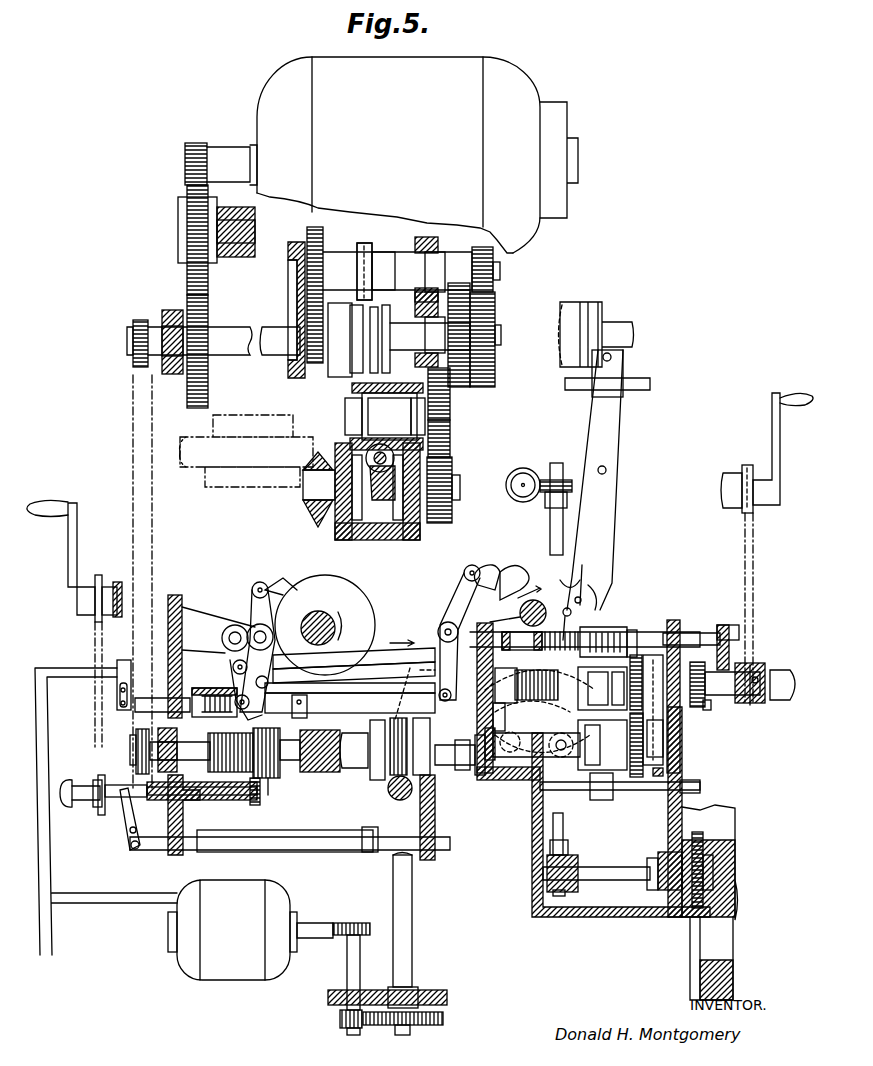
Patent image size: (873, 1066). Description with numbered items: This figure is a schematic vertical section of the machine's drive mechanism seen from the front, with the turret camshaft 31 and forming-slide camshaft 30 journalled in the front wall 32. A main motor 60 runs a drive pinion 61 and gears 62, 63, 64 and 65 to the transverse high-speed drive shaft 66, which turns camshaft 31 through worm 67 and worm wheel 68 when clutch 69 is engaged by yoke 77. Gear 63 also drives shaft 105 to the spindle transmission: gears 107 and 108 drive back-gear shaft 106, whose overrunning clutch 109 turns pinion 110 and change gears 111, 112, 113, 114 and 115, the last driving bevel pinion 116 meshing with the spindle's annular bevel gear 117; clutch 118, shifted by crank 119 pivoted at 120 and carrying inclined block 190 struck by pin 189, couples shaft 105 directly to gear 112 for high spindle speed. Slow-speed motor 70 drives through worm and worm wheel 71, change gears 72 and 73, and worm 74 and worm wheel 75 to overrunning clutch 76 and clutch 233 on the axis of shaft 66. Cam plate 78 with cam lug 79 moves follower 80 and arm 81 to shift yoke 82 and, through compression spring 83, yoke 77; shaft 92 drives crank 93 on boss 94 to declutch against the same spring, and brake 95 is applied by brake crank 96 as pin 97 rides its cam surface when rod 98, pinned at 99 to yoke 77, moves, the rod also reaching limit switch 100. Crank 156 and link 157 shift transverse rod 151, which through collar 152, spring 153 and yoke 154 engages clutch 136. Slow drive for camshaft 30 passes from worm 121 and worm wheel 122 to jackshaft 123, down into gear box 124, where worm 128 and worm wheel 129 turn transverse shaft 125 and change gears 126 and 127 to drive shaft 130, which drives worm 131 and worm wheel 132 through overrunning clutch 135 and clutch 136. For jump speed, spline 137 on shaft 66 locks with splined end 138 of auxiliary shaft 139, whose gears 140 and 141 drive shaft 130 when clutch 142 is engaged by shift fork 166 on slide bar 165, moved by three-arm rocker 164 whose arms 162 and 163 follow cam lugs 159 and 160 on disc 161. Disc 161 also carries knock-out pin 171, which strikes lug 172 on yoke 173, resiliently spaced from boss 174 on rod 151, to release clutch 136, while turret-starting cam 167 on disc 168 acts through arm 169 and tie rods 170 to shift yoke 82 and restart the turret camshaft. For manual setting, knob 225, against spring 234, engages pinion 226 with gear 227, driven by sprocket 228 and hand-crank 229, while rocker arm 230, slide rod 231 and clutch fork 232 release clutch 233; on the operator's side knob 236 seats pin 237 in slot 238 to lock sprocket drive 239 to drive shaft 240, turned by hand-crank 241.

The main motor 60 is at (522, 78).
The drive pinion 61 is at (185, 163).
The gear 62 is at (187, 250).
The gear 63 is at (190, 390).
The gear 64 is at (136, 355).
The shaft 105 is at (230, 335).
The back-gear shaft 106 is at (338, 255).
The reduction gear 107 is at (322, 362).
The reduction gear 108 is at (312, 232).
The overrunning clutch 109 is at (372, 246).
The pinion 110 is at (478, 250).
The change gear 111 is at (490, 362).
The change gear 112 is at (468, 380).
The change gear 113 is at (450, 410).
The change gear 114 is at (448, 440).
The change gear 115 is at (452, 508).
The bevel pinion 116 is at (315, 455).
The annular bevel gear 117 is at (198, 452).
The clutch 118 is at (388, 322).
The actuating crank 119 is at (612, 372).
The pivot 120 is at (615, 462).
The worm 121 is at (380, 500).
The worm wheel 122 is at (380, 445).
The jackshaft 123 is at (552, 535).
The hand-crank 241 is at (776, 458).
The sprocket drive 239 is at (752, 565).
The hand-crank 229 is at (77, 538).
The sprocket 228 is at (98, 648).
The limit switch 100 is at (122, 660).
The clutch-actuating rod 98 is at (155, 705).
The crank 156 is at (215, 660).
The longitudinally extending shaft 92 is at (235, 622).
The cam follower 80 is at (258, 582).
The crank arm 81 is at (270, 648).
The actuating crank 93 is at (247, 668).
The yoke 82 is at (200, 690).
The compression spring 83 is at (210, 696).
The cam plate 78 is at (313, 578).
The cam lug 79 is at (283, 578).
The turret camshaft 31 is at (320, 612).
The link 157 is at (325, 660).
The worm wheel 68 is at (363, 652).
The pin 99 is at (354, 667).
The pin 97 is at (310, 705).
The boss 94 is at (288, 706).
The tie rods 170 is at (375, 715).
The cam-follower rocker arm and crank 169 is at (440, 630).
The gear 65 is at (138, 752).
The high-speed drive shaft 66 is at (185, 760).
The yoke 77 is at (176, 749).
The clutch 69 is at (228, 750).
The brake crank 96 is at (276, 753).
The brake 95 is at (279, 788).
The worm 67 is at (315, 772).
The clutch 233 is at (352, 768).
The overrunning clutch 76 is at (379, 760).
The worm 74 is at (395, 790).
The worm wheel 75 is at (402, 800).
The spline 137 is at (448, 765).
The splined end 138 is at (462, 770).
The auxiliary shaft 139 is at (480, 775).
The knob 225 is at (78, 785).
The rocker arm 230 is at (125, 820).
The compression spring 234 is at (160, 800).
The pinion 226 is at (248, 796).
The gear 227 is at (258, 805).
The slide rod 231 is at (292, 845).
The clutch fork 232 is at (365, 828).
The second motor 70 is at (230, 972).
The worm and worm wheel 71 is at (360, 918).
The front wall 32 is at (432, 990).
The change gear 72 is at (340, 1020).
The change gear 73 is at (380, 1028).
The gear box 124 is at (658, 912).
The transverse shaft 125 is at (620, 875).
The worm 128 is at (570, 860).
The worm wheel 129 is at (566, 895).
The change gear 126 is at (700, 845).
The worm wheel 132 is at (585, 641).
The clutch-shift yoke 173 is at (518, 613).
The projecting lug 172 is at (559, 617).
The boss 174 is at (526, 680).
The worm 131 is at (540, 711).
The collar 152 is at (597, 627).
The compression spring 153 is at (610, 630).
The yoke 154 is at (632, 630).
The gear 141 is at (636, 655).
The overrunning clutch 135 is at (652, 655).
The clutch 136 is at (606, 687).
The transverse rod 151 is at (690, 633).
The drive shaft 130 is at (701, 676).
The drive shaft 240 is at (718, 695).
The slot 238 is at (745, 705).
The change gear 127 is at (703, 710).
The knob 236 is at (765, 678).
The pin 237 is at (753, 678).
The clutch 142 is at (636, 777).
The gear 140 is at (625, 790).
The disc 161 is at (539, 744).
The cam lug 160 is at (545, 740).
The arm 163 is at (520, 745).
The cam lug 159 is at (495, 725).
The arm 162 is at (530, 770).
The slide bar 165 is at (540, 785).
The three-arm rocker 164 is at (600, 798).
The shift fork 166 is at (640, 801).
The turret-starting cam 167 is at (488, 566).
The disc 168 is at (520, 568).
The forming-slide camshaft 30 is at (528, 584).
The pin 189 is at (565, 590).
The inclined block 190 is at (592, 573).
The feed knock-out pin 171 is at (589, 597).